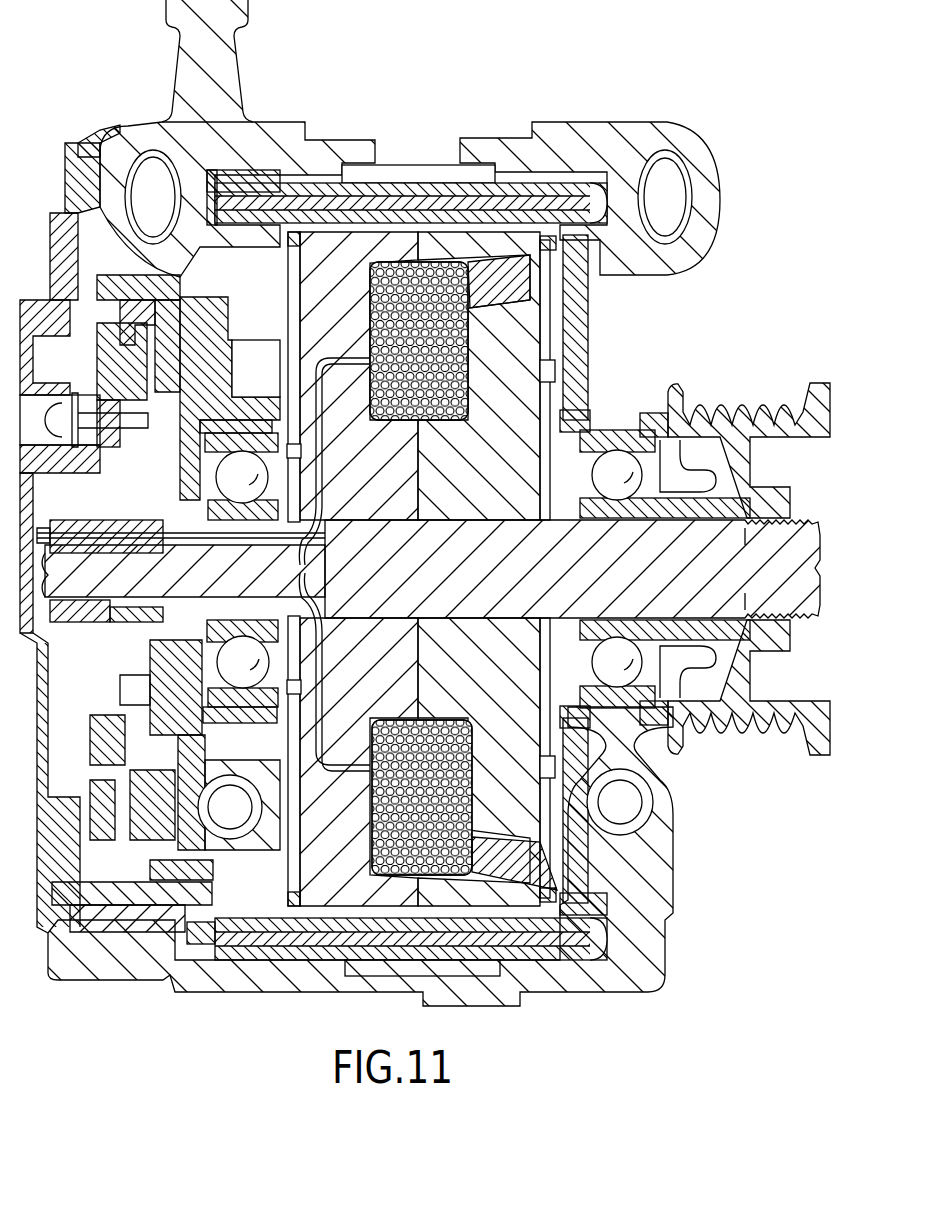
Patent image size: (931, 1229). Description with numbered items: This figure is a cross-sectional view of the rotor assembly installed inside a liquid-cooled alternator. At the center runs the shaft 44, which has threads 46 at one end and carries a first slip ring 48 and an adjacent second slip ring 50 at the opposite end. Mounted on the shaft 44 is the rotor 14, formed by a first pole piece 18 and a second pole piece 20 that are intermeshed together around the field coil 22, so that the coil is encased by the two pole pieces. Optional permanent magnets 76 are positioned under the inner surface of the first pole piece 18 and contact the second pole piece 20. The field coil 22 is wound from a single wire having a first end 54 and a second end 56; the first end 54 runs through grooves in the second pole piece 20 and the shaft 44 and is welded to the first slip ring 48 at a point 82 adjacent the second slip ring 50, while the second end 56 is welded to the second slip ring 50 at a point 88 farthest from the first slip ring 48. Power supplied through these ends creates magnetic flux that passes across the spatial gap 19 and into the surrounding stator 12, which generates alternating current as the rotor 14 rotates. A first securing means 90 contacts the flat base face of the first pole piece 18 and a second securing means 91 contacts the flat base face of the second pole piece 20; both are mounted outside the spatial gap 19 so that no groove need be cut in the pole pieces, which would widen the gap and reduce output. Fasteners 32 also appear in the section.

The stator 12 is at (432, 205).
The rotor 14 is at (407, 242).
The first pole piece 18 is at (555, 398).
The spatial gap 19 is at (478, 220).
The second pole piece 20 is at (290, 268).
The field coil 22 is at (460, 790).
The fastener 32 is at (557, 367).
The shaft 44 is at (490, 562).
The threads 46 is at (798, 620).
The first slip ring 48 is at (143, 517).
The second slip ring 50 is at (78, 625).
The first end 54 is at (342, 775).
The second end 56 is at (347, 366).
The permanent magnets 76 is at (483, 303).
The point 82 is at (107, 627).
The point 88 is at (44, 530).
The first securing means 90 is at (548, 318).
The second securing means 91 is at (285, 345).